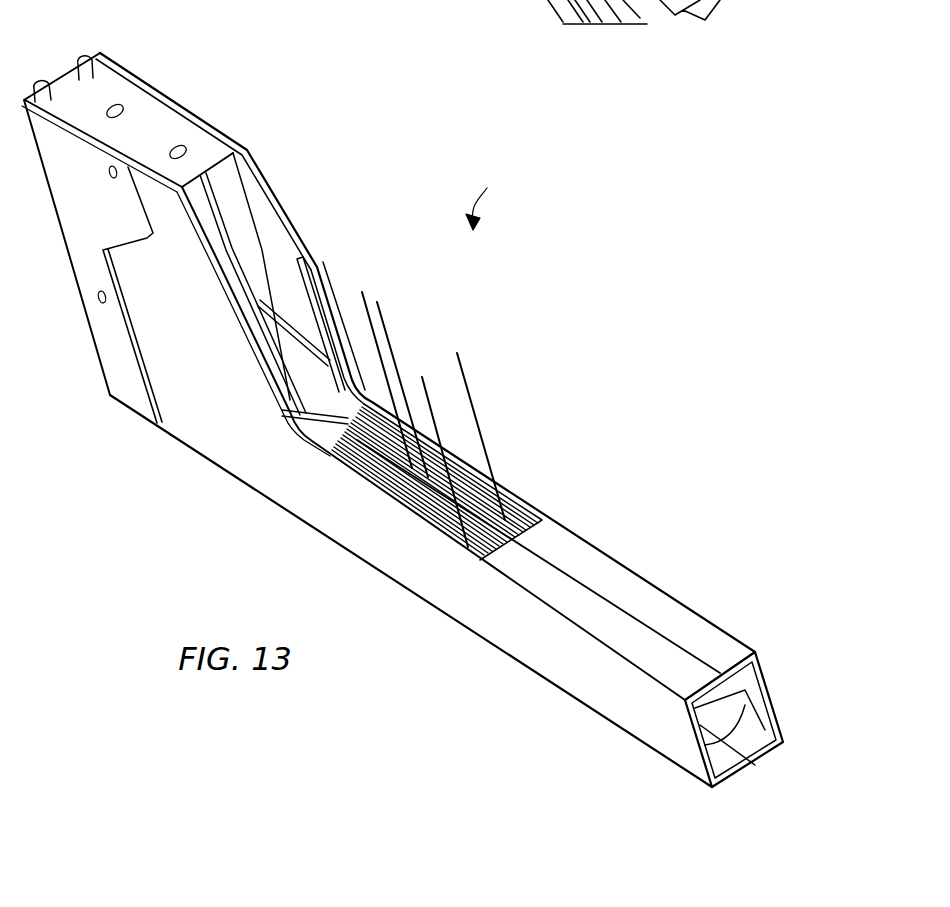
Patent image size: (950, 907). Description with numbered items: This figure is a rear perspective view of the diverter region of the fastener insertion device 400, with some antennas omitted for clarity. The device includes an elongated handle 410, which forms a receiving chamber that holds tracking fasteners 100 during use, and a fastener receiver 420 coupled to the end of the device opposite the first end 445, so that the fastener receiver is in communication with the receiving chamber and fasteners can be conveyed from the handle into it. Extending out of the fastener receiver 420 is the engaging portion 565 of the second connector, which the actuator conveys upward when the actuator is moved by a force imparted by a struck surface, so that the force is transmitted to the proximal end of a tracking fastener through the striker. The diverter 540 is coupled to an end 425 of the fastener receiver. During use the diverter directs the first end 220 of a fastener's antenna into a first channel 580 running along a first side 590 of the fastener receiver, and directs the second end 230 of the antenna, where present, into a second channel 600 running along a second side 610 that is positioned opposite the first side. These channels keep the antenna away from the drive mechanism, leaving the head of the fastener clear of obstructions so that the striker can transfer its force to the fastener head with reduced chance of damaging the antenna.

The tracking fastener 100 is at (450, 470).
The first end of the antenna 220 is at (270, 285).
The second end of the antenna 230 is at (308, 265).
The fastener insertion device 400 is at (497, 194).
The handle 410 is at (591, 541).
The fastener receiver 420 is at (158, 86).
The end of the fastener receiver 425 is at (327, 282).
The first end 445 is at (744, 770).
The diverter 540 is at (350, 383).
The engaging portion 565 is at (78, 52).
The first channel 580 is at (268, 200).
The first side 590 is at (248, 156).
The second channel 600 is at (238, 275).
The second side 610 is at (248, 318).